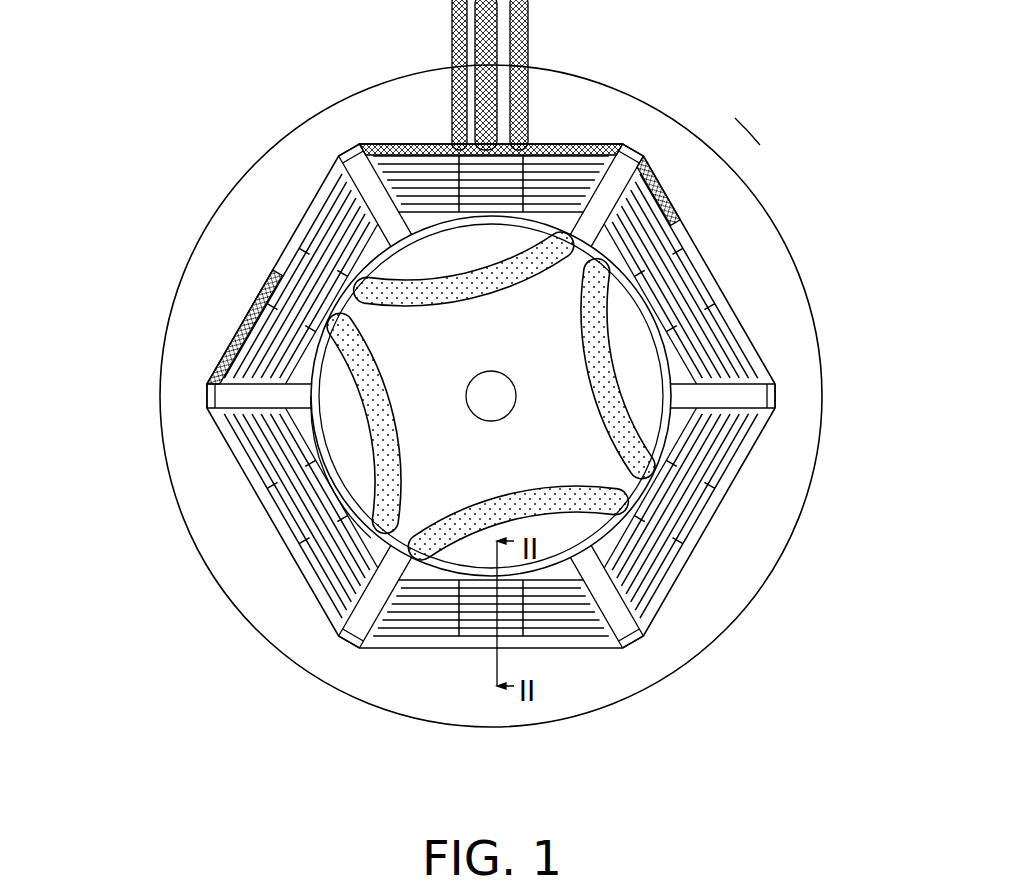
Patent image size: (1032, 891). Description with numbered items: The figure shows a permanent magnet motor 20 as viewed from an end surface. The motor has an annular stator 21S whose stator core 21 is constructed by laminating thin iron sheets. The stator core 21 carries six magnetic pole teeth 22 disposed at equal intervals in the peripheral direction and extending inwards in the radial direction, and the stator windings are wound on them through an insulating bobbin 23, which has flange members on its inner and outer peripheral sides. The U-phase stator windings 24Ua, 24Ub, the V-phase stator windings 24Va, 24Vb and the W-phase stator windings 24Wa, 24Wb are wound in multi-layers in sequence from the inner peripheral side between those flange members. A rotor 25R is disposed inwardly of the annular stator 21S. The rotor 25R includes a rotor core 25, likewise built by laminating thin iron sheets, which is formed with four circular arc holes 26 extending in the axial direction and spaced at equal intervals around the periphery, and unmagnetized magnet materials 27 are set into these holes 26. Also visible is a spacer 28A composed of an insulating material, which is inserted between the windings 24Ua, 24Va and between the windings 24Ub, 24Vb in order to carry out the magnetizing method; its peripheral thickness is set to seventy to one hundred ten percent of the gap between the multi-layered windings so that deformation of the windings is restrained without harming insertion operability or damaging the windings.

The permanent magnet motor 20 is at (856, 45).
The stator core 21 is at (803, 277).
The annular stator 21S is at (717, 170).
The magnetic pole teeth 22 is at (278, 278).
The insulating bobbin 23 is at (353, 487).
The U-phase stator winding 24Ua is at (733, 353).
The U-phase stator winding 24Ub is at (258, 455).
The V-phase stator winding 24Va is at (428, 150).
The V-phase stator winding 24Vb is at (578, 628).
The W-phase stator winding 24Wa is at (250, 365).
The W-phase stator winding 24Wb is at (705, 520).
The rotor core 25 is at (383, 553).
The rotor 25R is at (373, 538).
The circular arc holes 26 is at (612, 330).
The unmagnetized magnet materials 27 is at (337, 190).
The spacer 28A is at (613, 182).